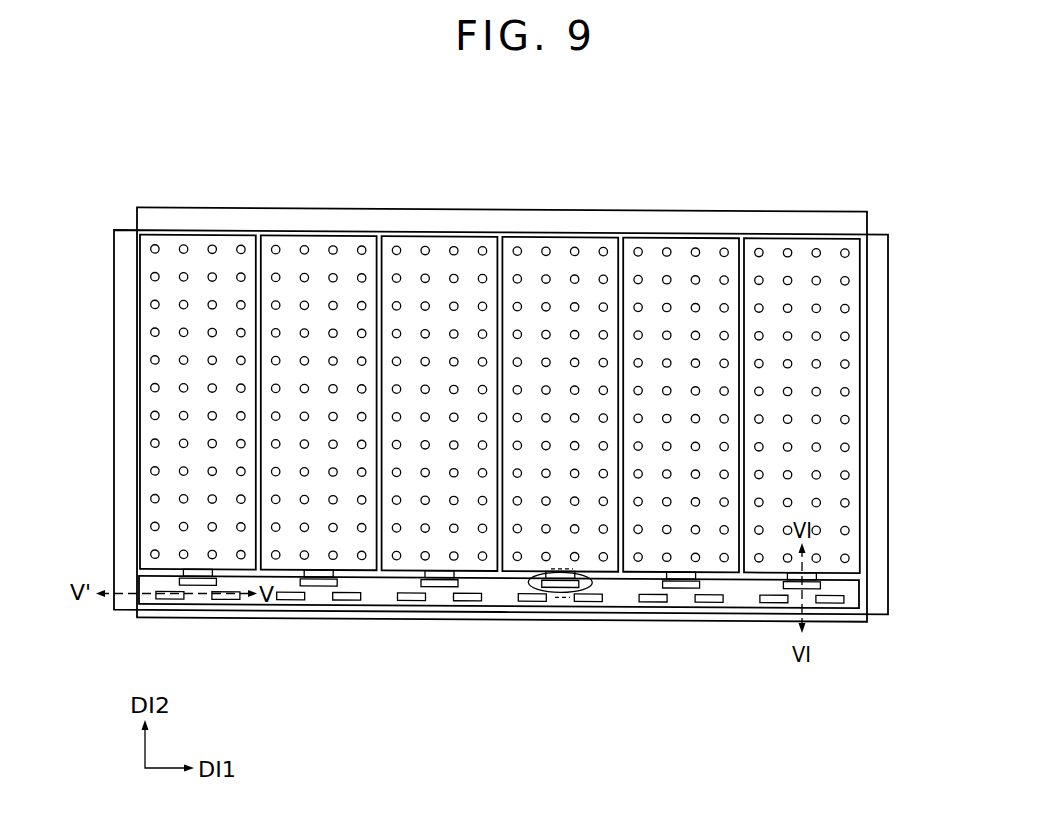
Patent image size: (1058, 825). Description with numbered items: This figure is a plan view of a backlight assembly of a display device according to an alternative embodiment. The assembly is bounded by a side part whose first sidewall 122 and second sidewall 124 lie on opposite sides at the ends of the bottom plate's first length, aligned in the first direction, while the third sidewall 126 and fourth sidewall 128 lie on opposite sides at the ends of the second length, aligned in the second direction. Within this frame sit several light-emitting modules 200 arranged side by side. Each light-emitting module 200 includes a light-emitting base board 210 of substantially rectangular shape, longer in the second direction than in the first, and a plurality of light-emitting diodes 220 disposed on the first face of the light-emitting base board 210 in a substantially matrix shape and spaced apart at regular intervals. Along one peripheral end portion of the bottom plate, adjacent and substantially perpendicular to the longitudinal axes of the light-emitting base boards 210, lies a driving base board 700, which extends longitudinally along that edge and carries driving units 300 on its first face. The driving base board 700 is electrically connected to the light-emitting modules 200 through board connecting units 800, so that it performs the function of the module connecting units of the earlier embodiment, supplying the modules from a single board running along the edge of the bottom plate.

The first sidewall 122 is at (118, 402).
The second sidewall 124 is at (883, 405).
The third sidewall 126 is at (505, 218).
The fourth sidewall 128 is at (440, 615).
The light-emitting module 200 is at (500, 350).
The light-emitting base board 210 is at (768, 243).
The light-emitting diode 220 is at (815, 248).
The driving unit 300 is at (513, 600).
The driving base board 700 is at (377, 597).
The board connecting unit 800 is at (557, 597).